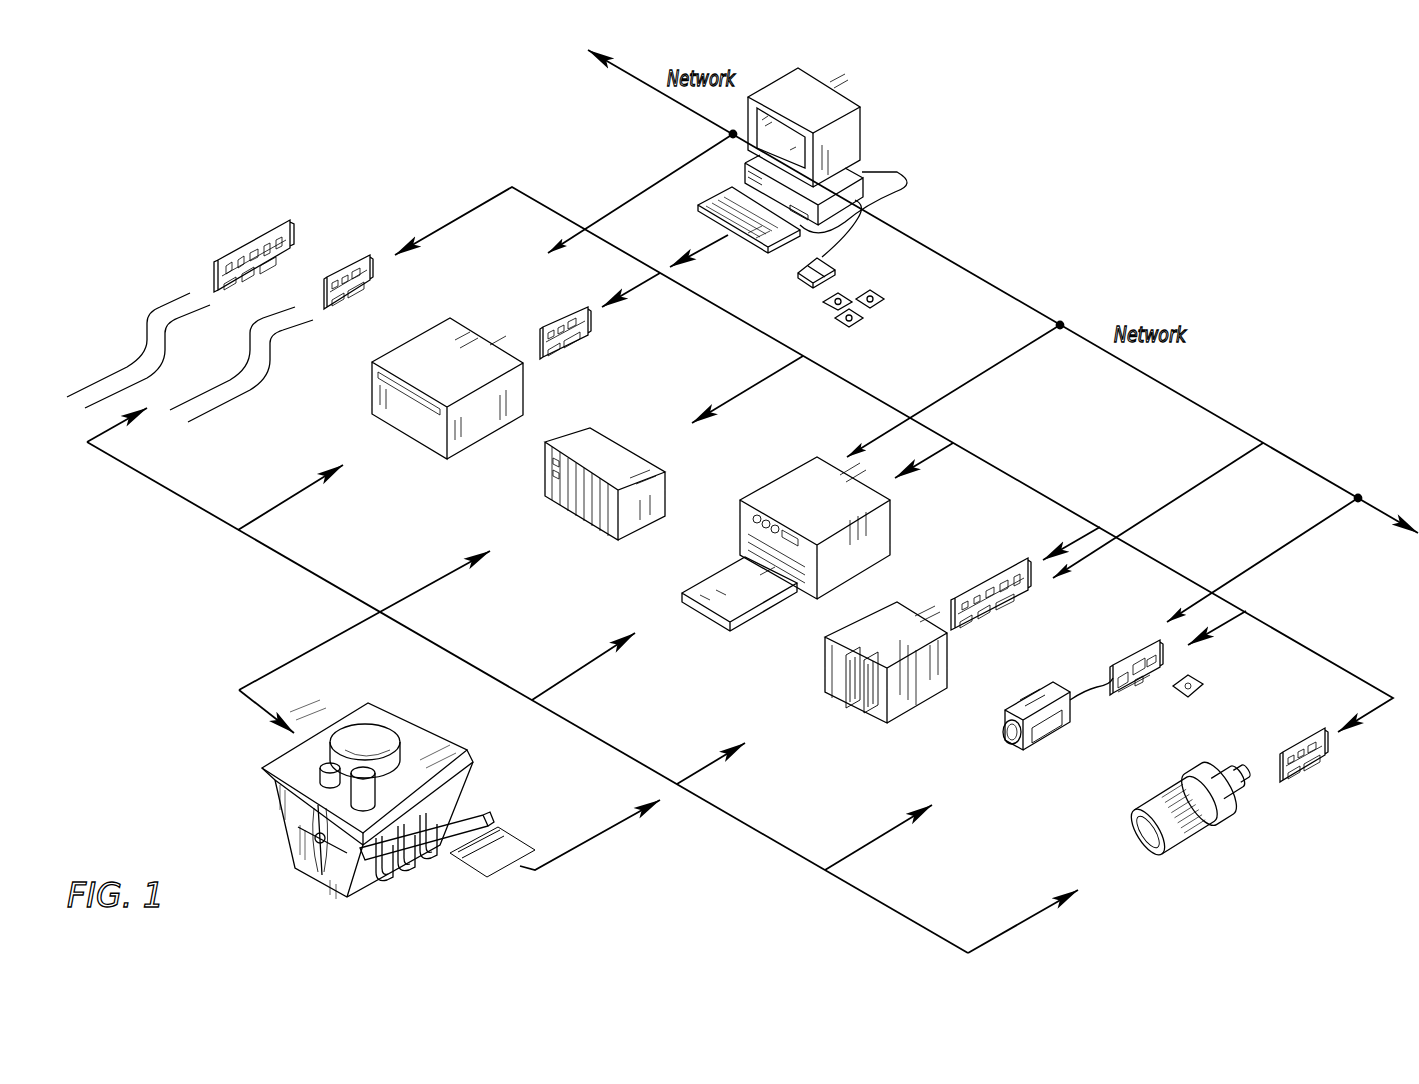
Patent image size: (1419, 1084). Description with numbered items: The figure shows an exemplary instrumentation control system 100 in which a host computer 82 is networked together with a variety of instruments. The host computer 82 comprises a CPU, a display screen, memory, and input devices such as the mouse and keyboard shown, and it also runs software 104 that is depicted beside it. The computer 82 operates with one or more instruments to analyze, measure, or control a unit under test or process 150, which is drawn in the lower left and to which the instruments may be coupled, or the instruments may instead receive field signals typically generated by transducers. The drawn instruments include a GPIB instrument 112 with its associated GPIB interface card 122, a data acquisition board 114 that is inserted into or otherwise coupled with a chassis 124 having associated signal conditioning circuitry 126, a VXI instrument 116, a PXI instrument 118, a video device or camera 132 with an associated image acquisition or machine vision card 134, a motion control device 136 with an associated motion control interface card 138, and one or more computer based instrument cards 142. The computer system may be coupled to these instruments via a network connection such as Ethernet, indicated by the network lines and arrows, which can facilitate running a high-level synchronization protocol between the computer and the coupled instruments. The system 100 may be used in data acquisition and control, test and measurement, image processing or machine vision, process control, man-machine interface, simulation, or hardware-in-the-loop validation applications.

The host computer 82 is at (828, 90).
The instrumentation control system 100 is at (1191, 122).
The software 104 is at (858, 325).
The GPIB instrument 112 is at (418, 345).
The data acquisition board 114 is at (1000, 607).
The VXI instrument 116 is at (778, 490).
The PXI instrument 118 is at (615, 445).
The GPIB interface card 122 is at (562, 317).
The chassis 124 is at (858, 691).
The signal conditioning circuitry 126 is at (852, 703).
The video device or camera 132 is at (1043, 730).
The image acquisition card 134 is at (1137, 657).
The motion control device 136 is at (1183, 832).
The motion control interface card 138 is at (1307, 765).
The computer based instrument card 142 is at (245, 240).
The unit under test (UUT) or process 150 is at (367, 878).